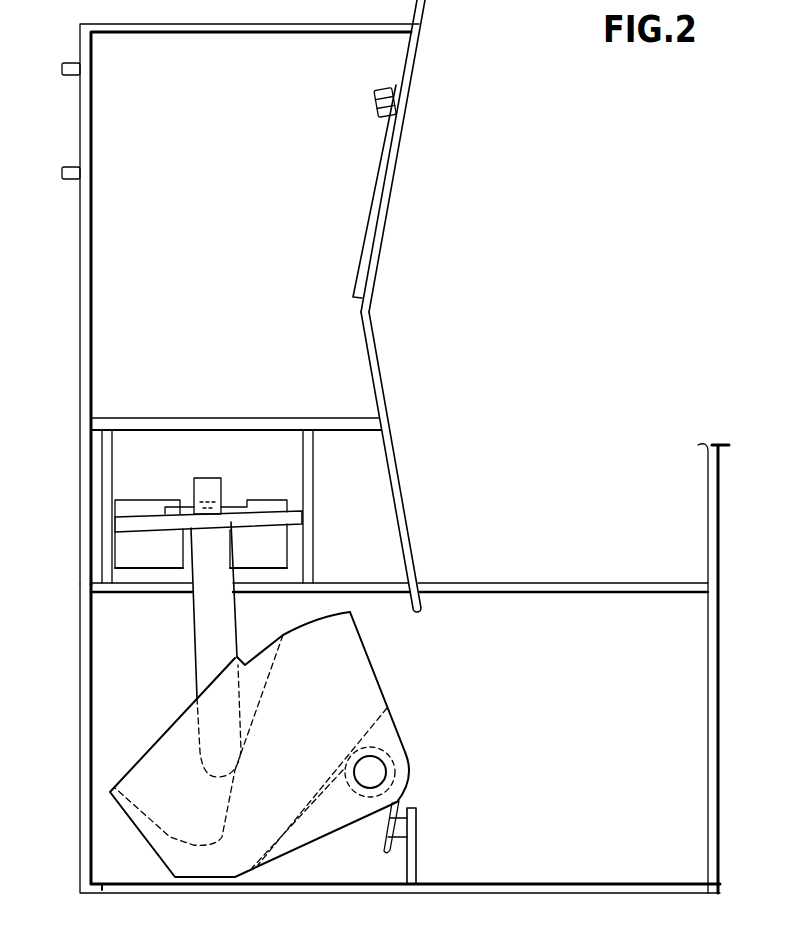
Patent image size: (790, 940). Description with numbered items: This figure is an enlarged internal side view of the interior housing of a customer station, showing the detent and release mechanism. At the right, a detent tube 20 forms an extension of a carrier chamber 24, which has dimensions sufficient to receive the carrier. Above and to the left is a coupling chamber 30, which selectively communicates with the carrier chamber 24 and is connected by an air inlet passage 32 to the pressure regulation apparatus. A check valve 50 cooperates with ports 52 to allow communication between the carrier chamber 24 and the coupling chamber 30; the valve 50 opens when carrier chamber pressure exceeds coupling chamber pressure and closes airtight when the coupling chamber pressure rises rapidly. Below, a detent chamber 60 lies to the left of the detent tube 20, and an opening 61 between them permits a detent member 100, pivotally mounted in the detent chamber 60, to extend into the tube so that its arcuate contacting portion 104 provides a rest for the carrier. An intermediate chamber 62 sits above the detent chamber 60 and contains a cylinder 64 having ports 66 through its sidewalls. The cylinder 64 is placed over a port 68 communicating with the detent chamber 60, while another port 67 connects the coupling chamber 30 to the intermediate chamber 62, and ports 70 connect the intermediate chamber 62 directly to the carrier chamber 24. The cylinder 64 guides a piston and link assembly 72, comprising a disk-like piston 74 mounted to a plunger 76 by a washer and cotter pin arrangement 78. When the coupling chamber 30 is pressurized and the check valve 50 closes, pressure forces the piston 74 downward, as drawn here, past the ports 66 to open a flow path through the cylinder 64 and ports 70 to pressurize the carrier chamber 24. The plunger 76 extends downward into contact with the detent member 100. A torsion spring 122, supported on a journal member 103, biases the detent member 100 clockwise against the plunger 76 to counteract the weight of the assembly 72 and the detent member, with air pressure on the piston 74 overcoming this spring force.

The detent tube 20 is at (585, 678).
The carrier chamber 24 is at (600, 283).
The coupling chamber 30 is at (203, 152).
The air inlet passage 32 is at (64, 63).
The check valve 50 is at (372, 190).
The ports 52 is at (372, 276).
The detent chamber 60 is at (93, 690).
The opening 61 is at (420, 812).
The intermediate chamber 62 is at (93, 441).
The cylinder 64 is at (313, 468).
The ports 66 is at (284, 553).
The port 67 is at (282, 417).
The port 68 is at (140, 590).
The ports 70 is at (418, 567).
The piston and link assembly 72 is at (162, 500).
The piston 74 is at (268, 500).
The plunger 76 is at (228, 641).
The washer and cotter pin arrangement 78 is at (233, 496).
The detent member 100 is at (322, 751).
The journal member 103 is at (375, 770).
The contacting portion 104 is at (338, 612).
The torsion spring 122 is at (381, 851).